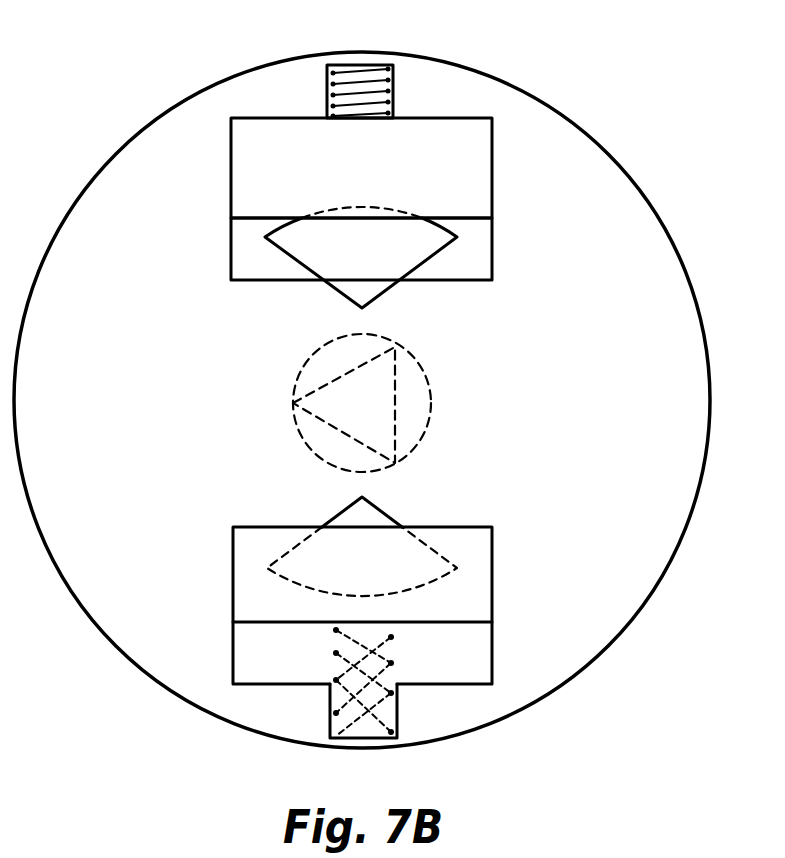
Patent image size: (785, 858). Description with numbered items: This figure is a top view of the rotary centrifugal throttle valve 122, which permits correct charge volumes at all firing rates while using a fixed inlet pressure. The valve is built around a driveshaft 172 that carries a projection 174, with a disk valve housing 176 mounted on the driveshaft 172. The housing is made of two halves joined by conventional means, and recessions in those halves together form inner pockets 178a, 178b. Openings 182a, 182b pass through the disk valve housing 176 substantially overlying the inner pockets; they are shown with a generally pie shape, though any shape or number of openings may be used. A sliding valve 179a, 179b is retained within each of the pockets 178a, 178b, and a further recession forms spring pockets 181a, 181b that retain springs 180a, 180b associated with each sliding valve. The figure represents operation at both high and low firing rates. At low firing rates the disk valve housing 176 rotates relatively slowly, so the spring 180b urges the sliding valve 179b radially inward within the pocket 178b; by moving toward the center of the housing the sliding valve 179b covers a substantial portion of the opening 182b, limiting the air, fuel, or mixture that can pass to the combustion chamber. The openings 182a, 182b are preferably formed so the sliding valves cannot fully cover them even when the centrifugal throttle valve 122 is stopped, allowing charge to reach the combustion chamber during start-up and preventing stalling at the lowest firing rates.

The rotary centrifugal throttle valve 122 is at (665, 126).
The disk valve housing 176 is at (620, 638).
The driveshaft 172 is at (415, 428).
The projection 174 is at (378, 378).
The inner pocket 178a is at (483, 246).
The inner pocket 178b is at (485, 655).
The sliding valve 179a is at (478, 172).
The sliding valve 179b is at (488, 550).
The spring 180a is at (358, 94).
The spring 180b is at (397, 718).
The spring pocket 181a is at (392, 84).
The spring pocket 181b is at (367, 738).
The opening 182a is at (373, 277).
The opening 182b is at (345, 517).